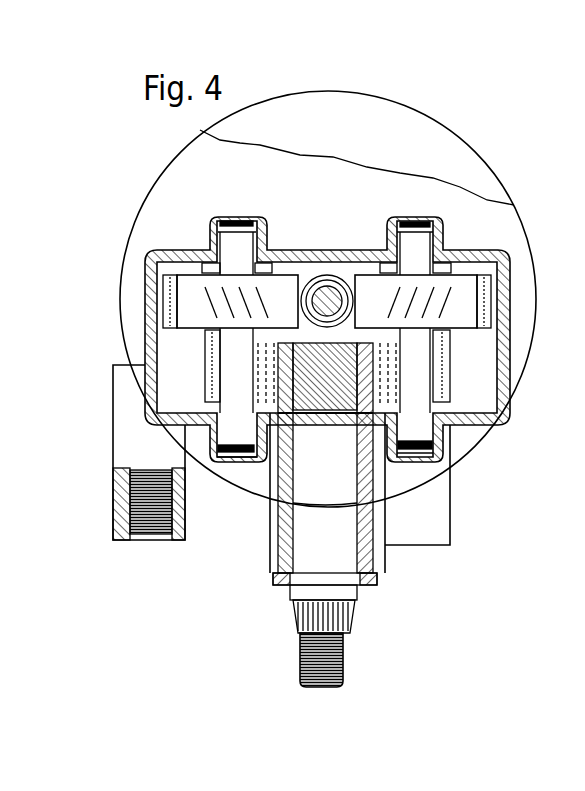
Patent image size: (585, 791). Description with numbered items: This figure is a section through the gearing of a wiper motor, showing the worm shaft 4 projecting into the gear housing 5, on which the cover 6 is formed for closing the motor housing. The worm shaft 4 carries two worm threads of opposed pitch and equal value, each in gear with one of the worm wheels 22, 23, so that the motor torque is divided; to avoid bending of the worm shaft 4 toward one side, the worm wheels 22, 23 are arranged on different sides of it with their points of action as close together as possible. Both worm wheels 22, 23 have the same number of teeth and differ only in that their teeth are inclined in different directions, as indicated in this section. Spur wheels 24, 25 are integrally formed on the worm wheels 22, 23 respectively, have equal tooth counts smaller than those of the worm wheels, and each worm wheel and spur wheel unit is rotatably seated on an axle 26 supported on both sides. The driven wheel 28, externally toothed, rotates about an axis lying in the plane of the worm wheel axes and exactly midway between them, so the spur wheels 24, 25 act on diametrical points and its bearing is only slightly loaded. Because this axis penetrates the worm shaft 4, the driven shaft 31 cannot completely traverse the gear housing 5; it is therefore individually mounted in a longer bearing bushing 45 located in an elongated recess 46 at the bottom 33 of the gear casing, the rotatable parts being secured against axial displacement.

The worm shaft 4 is at (327, 290).
The gear housing 5 is at (503, 312).
The cover 6 is at (445, 158).
The worm wheel 22 is at (467, 292).
The worm wheel 23 is at (187, 288).
The spur wheel 24 is at (440, 368).
The spur wheel 25 is at (210, 375).
The axle 26 is at (248, 255).
The driven wheel 28 is at (450, 430).
The driven shaft 31 is at (345, 563).
The bottom 33 is at (187, 437).
The bearing bushing 45 is at (385, 550).
The elongated recess 46 is at (377, 512).